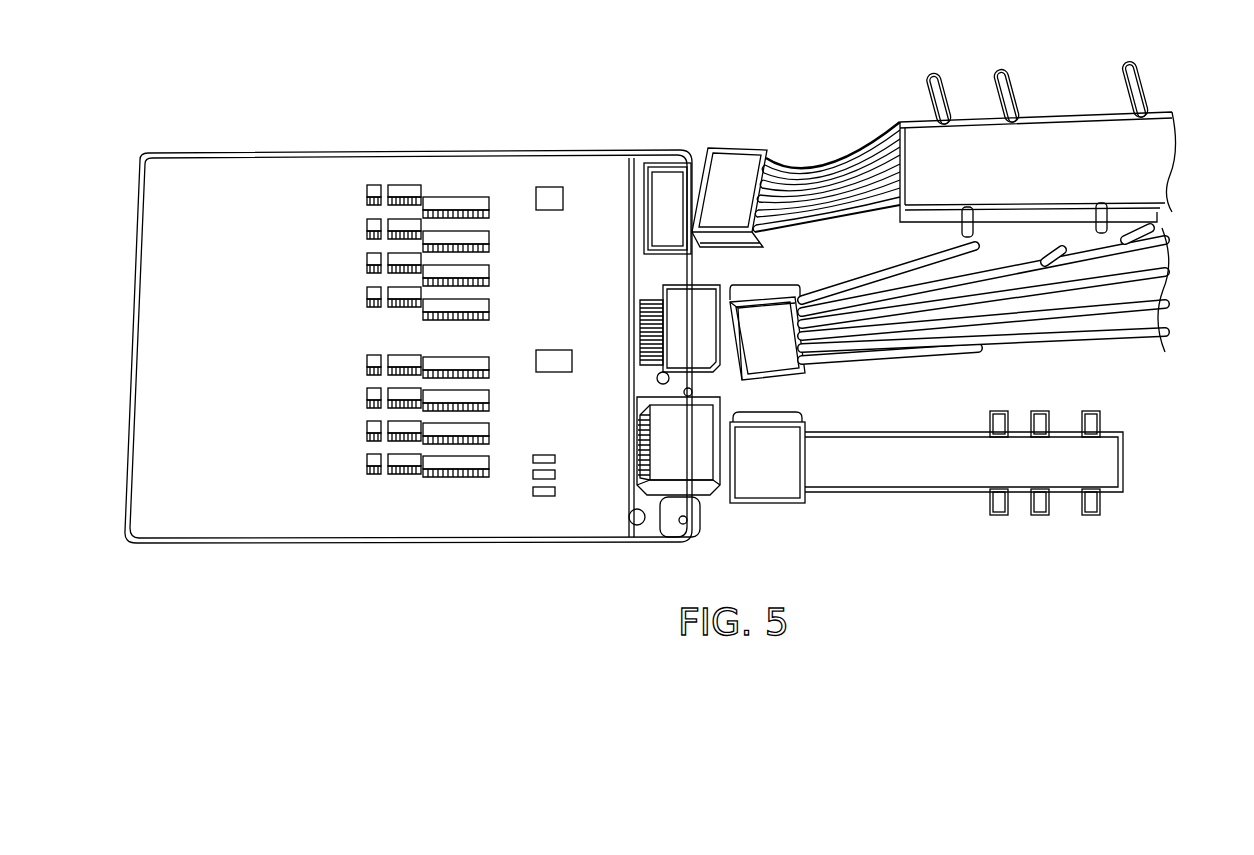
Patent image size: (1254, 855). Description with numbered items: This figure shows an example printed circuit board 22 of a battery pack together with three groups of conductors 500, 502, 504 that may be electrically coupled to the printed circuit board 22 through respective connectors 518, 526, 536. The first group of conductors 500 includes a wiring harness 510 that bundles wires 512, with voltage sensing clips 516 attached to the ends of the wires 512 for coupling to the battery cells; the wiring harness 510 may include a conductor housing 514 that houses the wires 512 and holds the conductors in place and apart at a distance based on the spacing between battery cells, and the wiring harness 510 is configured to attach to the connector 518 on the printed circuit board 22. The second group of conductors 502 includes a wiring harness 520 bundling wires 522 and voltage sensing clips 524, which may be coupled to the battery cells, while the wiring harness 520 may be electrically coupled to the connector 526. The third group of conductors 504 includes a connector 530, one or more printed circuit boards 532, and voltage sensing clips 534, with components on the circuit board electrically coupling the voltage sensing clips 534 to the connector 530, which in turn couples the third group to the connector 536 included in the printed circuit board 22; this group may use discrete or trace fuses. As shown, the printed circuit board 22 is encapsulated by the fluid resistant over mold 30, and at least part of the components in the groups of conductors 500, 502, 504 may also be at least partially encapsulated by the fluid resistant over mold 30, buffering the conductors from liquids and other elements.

The printed circuit board 22 is at (682, 117).
The fluid resistant over mold 30 is at (668, 182).
The first group of conductors 500 is at (1190, 105).
The second group of conductors 502 is at (1025, 308).
The third group of conductors 504 is at (998, 467).
The wiring harness 510 is at (707, 140).
The wires 512 is at (793, 162).
The conductor housing 514 is at (1145, 62).
The voltage sensing clips 516 is at (937, 106).
The connector 518 is at (626, 211).
The wiring harness 520 is at (765, 285).
The wires 522 is at (880, 278).
The voltage sensing clips 524 is at (982, 248).
The connector 526 is at (626, 328).
The connector 530 is at (766, 412).
The printed circuit boards 532 is at (925, 476).
The voltage sensing clips 534 is at (993, 418).
The connector 536 is at (626, 433).